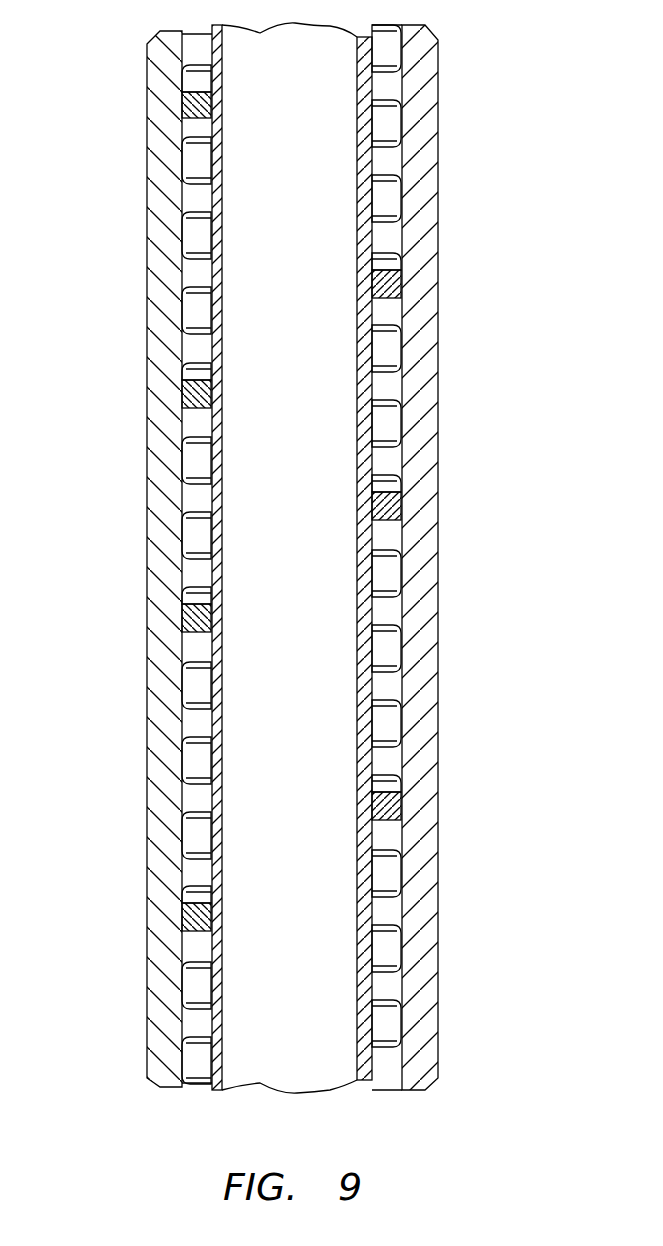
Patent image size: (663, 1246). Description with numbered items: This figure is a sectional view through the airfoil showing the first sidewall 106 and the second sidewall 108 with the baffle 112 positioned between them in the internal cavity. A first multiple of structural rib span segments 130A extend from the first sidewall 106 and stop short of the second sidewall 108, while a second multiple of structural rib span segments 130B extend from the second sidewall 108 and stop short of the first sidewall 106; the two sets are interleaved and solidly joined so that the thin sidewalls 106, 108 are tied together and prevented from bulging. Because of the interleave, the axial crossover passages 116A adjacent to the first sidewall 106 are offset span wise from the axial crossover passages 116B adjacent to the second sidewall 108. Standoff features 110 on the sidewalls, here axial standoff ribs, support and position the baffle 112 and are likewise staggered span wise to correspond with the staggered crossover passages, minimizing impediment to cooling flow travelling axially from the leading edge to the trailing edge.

The first sidewall 106 is at (162, 492).
The second sidewall 108 is at (428, 385).
The standoff features 110 is at (398, 287).
The baffle 112 is at (300, 206).
The axial crossover passages adjacent to the first sidewall 116A is at (200, 643).
The axial crossover passages adjacent to the second sidewall 116B is at (385, 681).
The first multiple of structural rib span segments 130A is at (192, 165).
The second multiple of structural rib span segments 130B is at (388, 125).